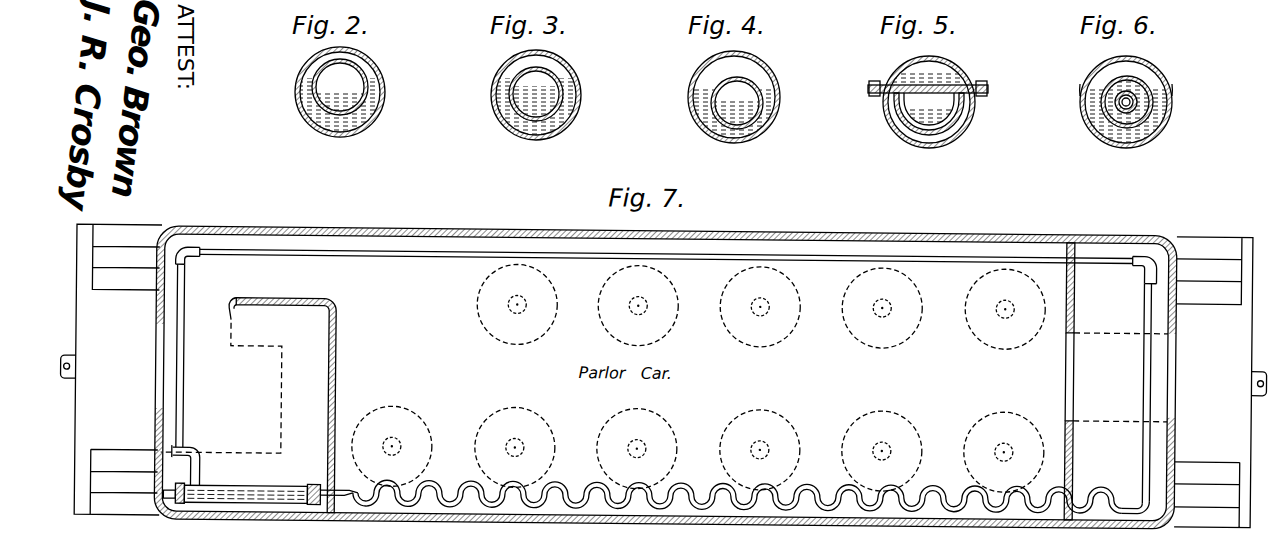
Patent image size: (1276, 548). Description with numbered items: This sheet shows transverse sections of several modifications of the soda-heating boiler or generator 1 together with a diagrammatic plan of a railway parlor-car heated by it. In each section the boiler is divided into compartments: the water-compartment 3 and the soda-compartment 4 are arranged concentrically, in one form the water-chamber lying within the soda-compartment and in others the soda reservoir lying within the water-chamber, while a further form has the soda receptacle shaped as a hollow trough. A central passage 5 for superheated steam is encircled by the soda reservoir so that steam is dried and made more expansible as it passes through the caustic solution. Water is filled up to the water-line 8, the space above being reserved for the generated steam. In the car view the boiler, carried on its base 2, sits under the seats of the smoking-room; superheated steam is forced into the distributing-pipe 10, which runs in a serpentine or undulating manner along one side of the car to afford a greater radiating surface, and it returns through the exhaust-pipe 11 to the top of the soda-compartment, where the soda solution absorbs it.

In FIG. 7, the boiler or generator 1 is at (262, 490).
In FIG. 7, the base 2 is at (183, 483).
In FIG. 3, the water-compartment 3 is at (513, 73).
In FIG. 4, the water-compartment 3 is at (725, 70).
In FIG. 5, the water-compartment 3 is at (888, 122).
In FIG. 6, the water-compartment 3 is at (1126, 102).
In FIG. 2, the soda-compartment 4 is at (370, 78).
In FIG. 3, the soda-compartment 4 is at (540, 82).
In FIG. 4, the soda-compartment 4 is at (737, 103).
In FIG. 5, the soda-compartment 4 is at (929, 98).
In FIG. 6, the soda-compartment 4 is at (1127, 102).
In FIG. 2, the passage for superheated steam 5 is at (345, 70).
In FIG. 6, the passage for superheated steam 5 is at (1112, 115).
In FIG. 6, the water-line 8 is at (1080, 90).
In FIG. 7, the distributing-pipe 10 is at (737, 487).
In FIG. 7, the exhaust-pipe 11 is at (204, 480).